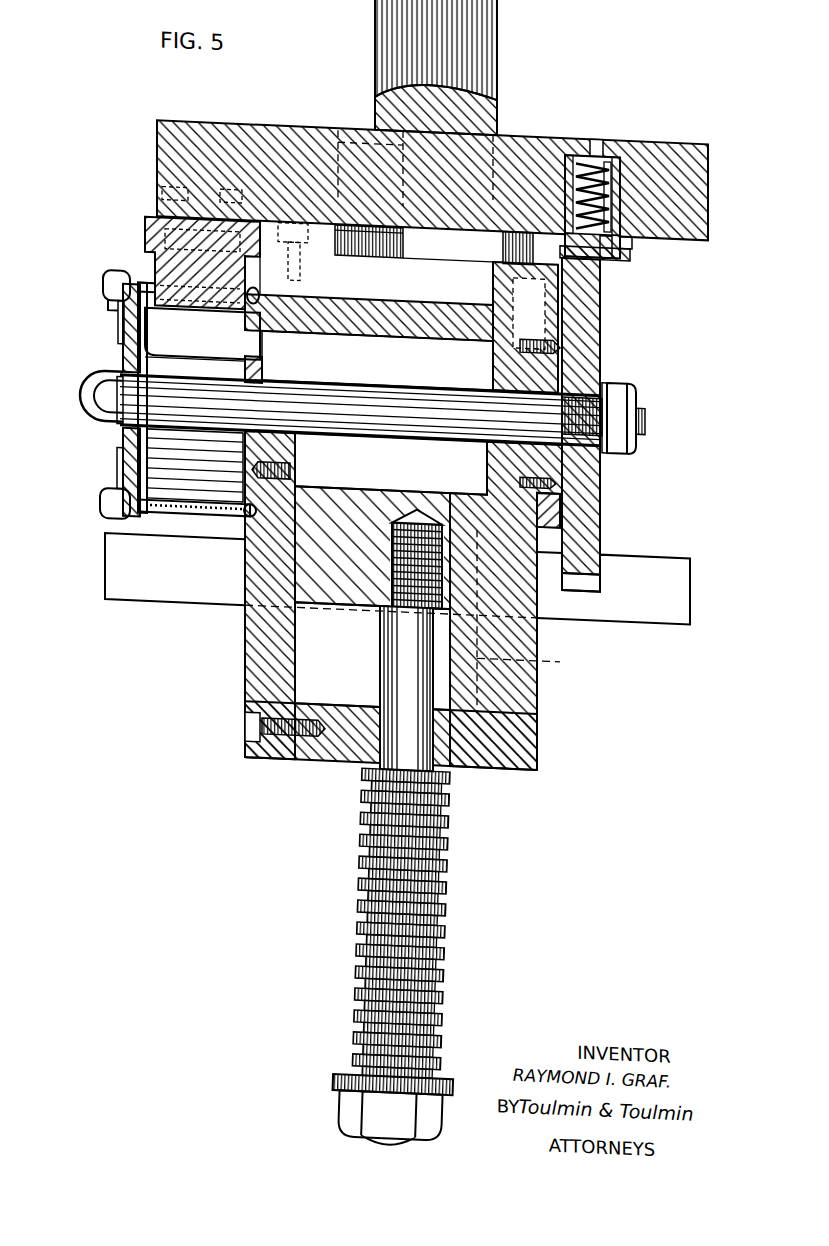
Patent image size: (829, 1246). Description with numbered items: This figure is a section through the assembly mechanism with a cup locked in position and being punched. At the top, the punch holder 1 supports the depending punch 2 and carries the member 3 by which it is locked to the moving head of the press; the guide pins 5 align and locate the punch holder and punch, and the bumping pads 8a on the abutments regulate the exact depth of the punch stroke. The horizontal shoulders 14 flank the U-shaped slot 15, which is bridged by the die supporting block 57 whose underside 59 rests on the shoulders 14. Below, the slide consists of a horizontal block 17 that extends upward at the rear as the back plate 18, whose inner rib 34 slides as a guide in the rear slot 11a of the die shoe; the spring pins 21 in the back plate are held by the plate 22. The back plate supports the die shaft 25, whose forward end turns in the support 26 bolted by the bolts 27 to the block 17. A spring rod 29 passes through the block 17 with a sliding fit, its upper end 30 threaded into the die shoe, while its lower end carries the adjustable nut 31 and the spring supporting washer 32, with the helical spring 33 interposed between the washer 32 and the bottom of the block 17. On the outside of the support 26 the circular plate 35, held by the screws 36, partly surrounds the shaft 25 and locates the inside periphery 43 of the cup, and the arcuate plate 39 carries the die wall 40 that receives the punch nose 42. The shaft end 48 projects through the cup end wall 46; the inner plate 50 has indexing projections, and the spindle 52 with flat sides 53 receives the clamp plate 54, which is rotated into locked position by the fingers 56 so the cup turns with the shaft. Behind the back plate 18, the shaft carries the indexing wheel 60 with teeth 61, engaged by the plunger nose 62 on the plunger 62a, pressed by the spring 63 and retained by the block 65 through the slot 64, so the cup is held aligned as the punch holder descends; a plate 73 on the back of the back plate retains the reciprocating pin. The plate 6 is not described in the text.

The punch holder 1 is at (520, 124).
The punch 2 is at (145, 256).
The locking member 3 is at (497, 38).
The guide pins 5 is at (403, 235).
The bolster plate 6 is at (105, 575).
The bumping pads 8a is at (312, 230).
The slot 11a is at (560, 644).
The horizontal shoulders 14 is at (357, 326).
The U-shaped slot 15 is at (430, 450).
The horizontal block 17 is at (337, 757).
The back plate 18 is at (532, 615).
The spring pins 21 is at (503, 230).
The plate 22 is at (493, 253).
The die shaft 25 is at (425, 381).
The support 26 is at (245, 654).
The bolts 27 is at (250, 718).
The spring rod 29 is at (387, 647).
The upper end of spring rod 30 is at (360, 599).
The adjustable nut 31 is at (345, 1102).
The spring supporting washer 32 is at (338, 1072).
The helical spring 33 is at (355, 878).
The rib 34 is at (388, 628).
The circular plate 35 is at (243, 508).
The screws 36 is at (292, 464).
The arcuate plate 39 is at (240, 346).
The die wall 40 is at (125, 304).
The punch nose 42 is at (220, 312).
The inside periphery of cup 43 is at (172, 507).
The end wall of cup 46 is at (122, 331).
The end of shaft 48 is at (112, 427).
The inner plate 50 is at (157, 373).
The spindle 52 is at (82, 398).
The flat sides 53 is at (92, 393).
The clamp plate 54 is at (122, 353).
The fingers 56 is at (103, 285).
The die supporting block 57 is at (397, 309).
The underside of block 59 is at (460, 322).
The indexing wheel 60 is at (603, 304).
The teeth 61 is at (582, 563).
The plunger nose 62 is at (632, 233).
The plunger 62a is at (613, 167).
The spring 63 is at (597, 145).
The slot 64 is at (606, 245).
The block 65 is at (632, 223).
The plate 73 is at (557, 497).